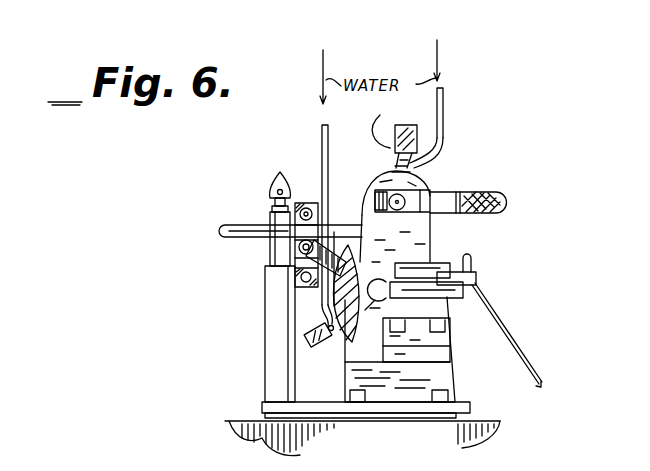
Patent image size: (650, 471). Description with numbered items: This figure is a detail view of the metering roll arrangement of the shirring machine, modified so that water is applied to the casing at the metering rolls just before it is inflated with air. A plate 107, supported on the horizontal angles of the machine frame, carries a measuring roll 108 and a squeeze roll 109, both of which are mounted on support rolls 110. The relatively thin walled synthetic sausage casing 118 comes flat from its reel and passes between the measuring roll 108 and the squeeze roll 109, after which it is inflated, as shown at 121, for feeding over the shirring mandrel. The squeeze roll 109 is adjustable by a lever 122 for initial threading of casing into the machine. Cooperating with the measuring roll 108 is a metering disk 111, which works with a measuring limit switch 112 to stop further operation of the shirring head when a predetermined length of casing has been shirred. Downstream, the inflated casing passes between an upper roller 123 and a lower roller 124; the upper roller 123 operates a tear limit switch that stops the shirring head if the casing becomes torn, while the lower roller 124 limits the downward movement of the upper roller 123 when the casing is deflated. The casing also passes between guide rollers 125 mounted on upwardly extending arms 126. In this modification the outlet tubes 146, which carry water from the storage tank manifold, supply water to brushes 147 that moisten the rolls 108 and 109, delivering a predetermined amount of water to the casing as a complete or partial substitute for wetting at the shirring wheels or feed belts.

The plate 107 is at (463, 414).
The measuring roll 108 is at (364, 214).
The squeeze roll 109 is at (392, 171).
The support rolls 110 is at (432, 228).
The metering disk 111 is at (474, 276).
The measuring limit switch 112 is at (468, 290).
The synthetic sausage casing 118 is at (505, 330).
The inflated casing 121 is at (230, 228).
The lever 122 is at (490, 194).
The upper roller 123 is at (308, 202).
The lower roller 124 is at (299, 247).
The guide rollers 125 is at (272, 195).
The upwardly extending arms 126 is at (265, 342).
The outlet tubes 146 is at (321, 132).
The brushes 147 is at (380, 122).